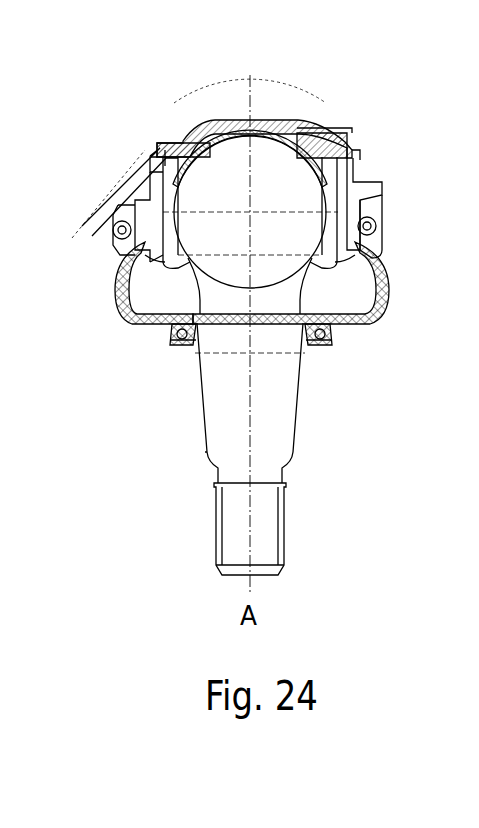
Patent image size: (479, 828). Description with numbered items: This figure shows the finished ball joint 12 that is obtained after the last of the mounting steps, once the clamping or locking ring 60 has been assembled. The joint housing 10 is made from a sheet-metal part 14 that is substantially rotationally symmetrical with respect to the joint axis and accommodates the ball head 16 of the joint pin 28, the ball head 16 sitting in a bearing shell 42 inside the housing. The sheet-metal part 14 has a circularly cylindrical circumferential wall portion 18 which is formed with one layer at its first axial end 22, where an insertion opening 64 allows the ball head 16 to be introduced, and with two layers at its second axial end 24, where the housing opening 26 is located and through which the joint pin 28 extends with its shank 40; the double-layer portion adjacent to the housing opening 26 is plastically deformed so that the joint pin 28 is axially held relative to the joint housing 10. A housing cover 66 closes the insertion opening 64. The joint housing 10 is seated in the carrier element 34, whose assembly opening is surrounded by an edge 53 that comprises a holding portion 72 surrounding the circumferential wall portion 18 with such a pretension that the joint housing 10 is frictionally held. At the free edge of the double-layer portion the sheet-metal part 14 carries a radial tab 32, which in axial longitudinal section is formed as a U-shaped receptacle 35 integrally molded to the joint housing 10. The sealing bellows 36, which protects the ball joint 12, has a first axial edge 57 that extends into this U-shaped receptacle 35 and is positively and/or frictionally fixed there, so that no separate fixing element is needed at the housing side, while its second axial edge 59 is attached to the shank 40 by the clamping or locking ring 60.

The joint housing 10 is at (225, 194).
The ball joint 12 is at (145, 456).
The sheet-metal part 14 is at (153, 275).
The ball head 16 is at (288, 201).
The circumferential wall portion 18 is at (155, 198).
The first axial end 22 is at (345, 128).
The second axial end 24 is at (331, 270).
The housing opening 26 is at (188, 281).
The joint pin 28 is at (284, 416).
The radial tab 32 is at (70, 230).
The carrier element 34 is at (104, 206).
The U-shaped receptacle 35 is at (111, 230).
The sealing bellows 36 is at (387, 292).
The shank 40 is at (285, 431).
The bearing shell 42 is at (165, 158).
The edge of the assembly opening 53 is at (362, 197).
The first axial edge 57 is at (369, 226).
The second axial edge 59 is at (317, 346).
The clamping or locking ring 60 is at (325, 340).
The insertion opening 64 is at (180, 122).
The housing cover 66 is at (272, 121).
The holding portion 72 is at (353, 180).